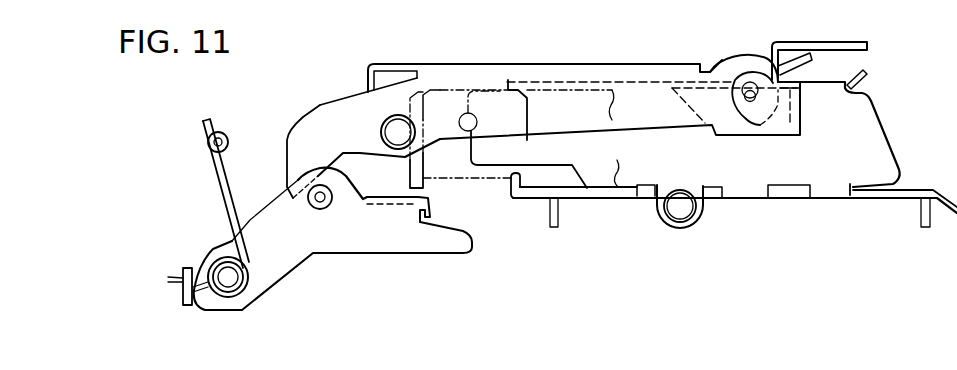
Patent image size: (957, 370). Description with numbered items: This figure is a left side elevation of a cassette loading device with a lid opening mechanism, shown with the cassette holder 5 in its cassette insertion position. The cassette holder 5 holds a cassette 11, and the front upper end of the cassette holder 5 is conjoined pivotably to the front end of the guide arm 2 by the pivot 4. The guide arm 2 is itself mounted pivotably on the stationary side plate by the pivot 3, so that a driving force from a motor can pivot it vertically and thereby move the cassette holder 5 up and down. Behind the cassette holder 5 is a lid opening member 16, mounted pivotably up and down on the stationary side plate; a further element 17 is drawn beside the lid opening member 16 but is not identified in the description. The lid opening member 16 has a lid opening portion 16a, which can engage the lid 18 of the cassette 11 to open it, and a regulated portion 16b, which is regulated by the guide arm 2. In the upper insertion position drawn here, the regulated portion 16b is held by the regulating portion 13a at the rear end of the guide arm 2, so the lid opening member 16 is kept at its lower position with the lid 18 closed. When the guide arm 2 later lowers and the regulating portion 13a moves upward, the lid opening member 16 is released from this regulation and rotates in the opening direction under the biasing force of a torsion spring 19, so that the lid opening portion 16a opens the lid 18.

The guide arm 2 is at (640, 73).
The pivot 3 is at (392, 128).
The pivot 4 is at (750, 86).
The cassette holder 5 is at (744, 190).
The cassette 11 is at (462, 173).
The regulating portion 13a is at (303, 131).
The lid opening member 16 is at (270, 268).
The lid opening portion 16a is at (401, 197).
The regulated portion 16b is at (327, 203).
The pivot shaft 17 is at (228, 283).
The lid 18 is at (410, 97).
The torsion spring 19 is at (222, 190).